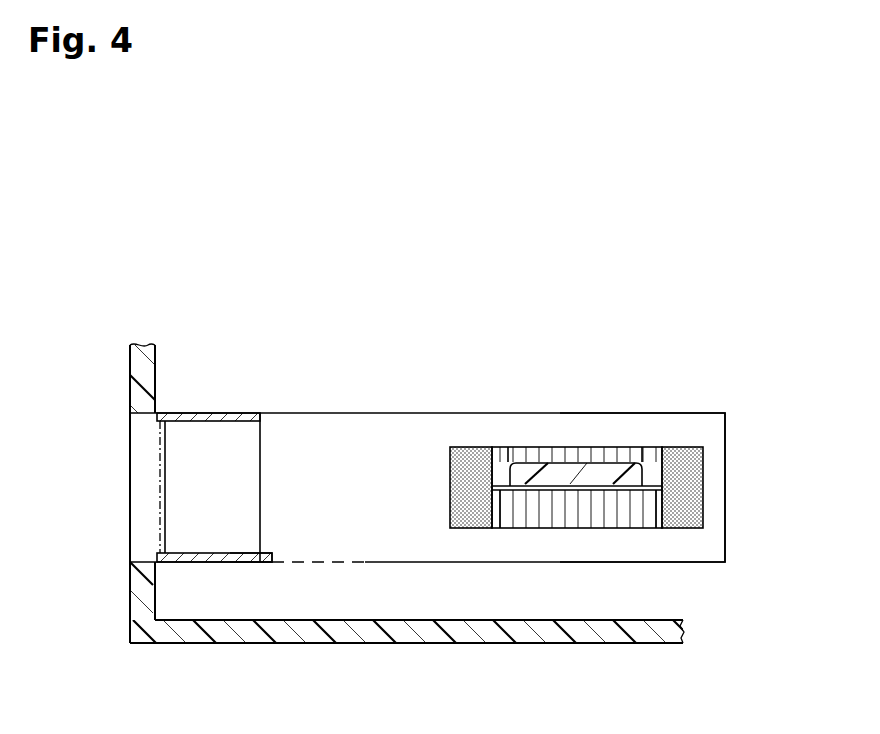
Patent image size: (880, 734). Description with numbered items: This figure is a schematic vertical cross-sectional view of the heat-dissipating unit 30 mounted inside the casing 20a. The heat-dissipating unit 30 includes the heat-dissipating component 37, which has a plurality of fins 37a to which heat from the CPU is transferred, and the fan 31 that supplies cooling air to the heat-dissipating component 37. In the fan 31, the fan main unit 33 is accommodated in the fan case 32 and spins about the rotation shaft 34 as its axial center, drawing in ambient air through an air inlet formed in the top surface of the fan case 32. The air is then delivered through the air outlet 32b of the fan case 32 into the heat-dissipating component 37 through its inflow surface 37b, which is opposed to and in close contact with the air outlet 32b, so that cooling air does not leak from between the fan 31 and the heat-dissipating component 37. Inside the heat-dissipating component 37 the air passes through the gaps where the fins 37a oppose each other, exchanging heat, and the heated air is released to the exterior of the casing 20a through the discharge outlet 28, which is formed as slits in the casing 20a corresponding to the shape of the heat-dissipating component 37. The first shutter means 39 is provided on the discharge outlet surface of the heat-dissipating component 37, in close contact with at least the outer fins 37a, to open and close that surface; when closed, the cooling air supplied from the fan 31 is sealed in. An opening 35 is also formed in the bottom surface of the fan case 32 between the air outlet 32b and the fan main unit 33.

The casing 20a is at (546, 632).
The discharge outlet 28 is at (118, 495).
The heat-dissipating unit 30 is at (428, 463).
The fan 31 is at (510, 413).
The fan case 32 is at (673, 413).
The air outlet 32b is at (260, 522).
The fan main unit 33 is at (702, 476).
The rotation shaft 34 is at (575, 475).
The opening 35 is at (340, 566).
The heat-dissipating component 37 is at (205, 413).
The fins 37a is at (188, 452).
The inflow surface 37b is at (260, 458).
The first shutter means 39 is at (162, 522).